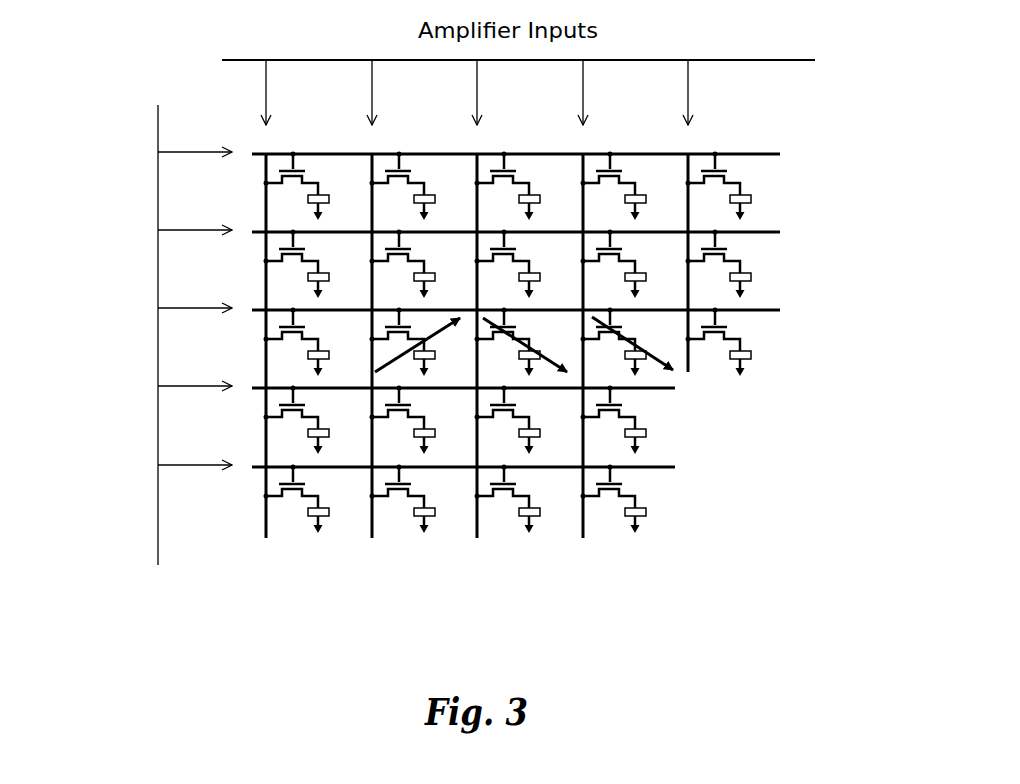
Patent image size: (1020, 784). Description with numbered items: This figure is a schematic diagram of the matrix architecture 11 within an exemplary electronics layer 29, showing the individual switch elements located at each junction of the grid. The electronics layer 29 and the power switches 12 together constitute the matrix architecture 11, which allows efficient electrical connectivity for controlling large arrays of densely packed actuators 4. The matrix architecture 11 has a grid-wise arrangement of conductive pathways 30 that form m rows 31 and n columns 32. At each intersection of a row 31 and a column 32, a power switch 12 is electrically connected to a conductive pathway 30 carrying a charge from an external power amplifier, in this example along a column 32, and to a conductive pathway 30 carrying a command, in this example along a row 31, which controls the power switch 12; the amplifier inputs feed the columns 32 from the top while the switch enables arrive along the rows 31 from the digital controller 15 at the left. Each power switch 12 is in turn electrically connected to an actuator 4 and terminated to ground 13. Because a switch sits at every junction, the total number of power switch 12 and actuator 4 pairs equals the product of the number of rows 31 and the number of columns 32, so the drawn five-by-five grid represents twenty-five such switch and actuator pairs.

The electronics layer 29 is at (841, 187).
The rows 31 is at (780, 232).
The conductive pathways 30 is at (675, 388).
The columns 32 is at (478, 540).
The matrix architecture 11 is at (297, 545).
The power switch 12 is at (632, 483).
The ground 13 is at (630, 527).
The actuator 4 is at (645, 517).
The digital controller 15 is at (136, 335).